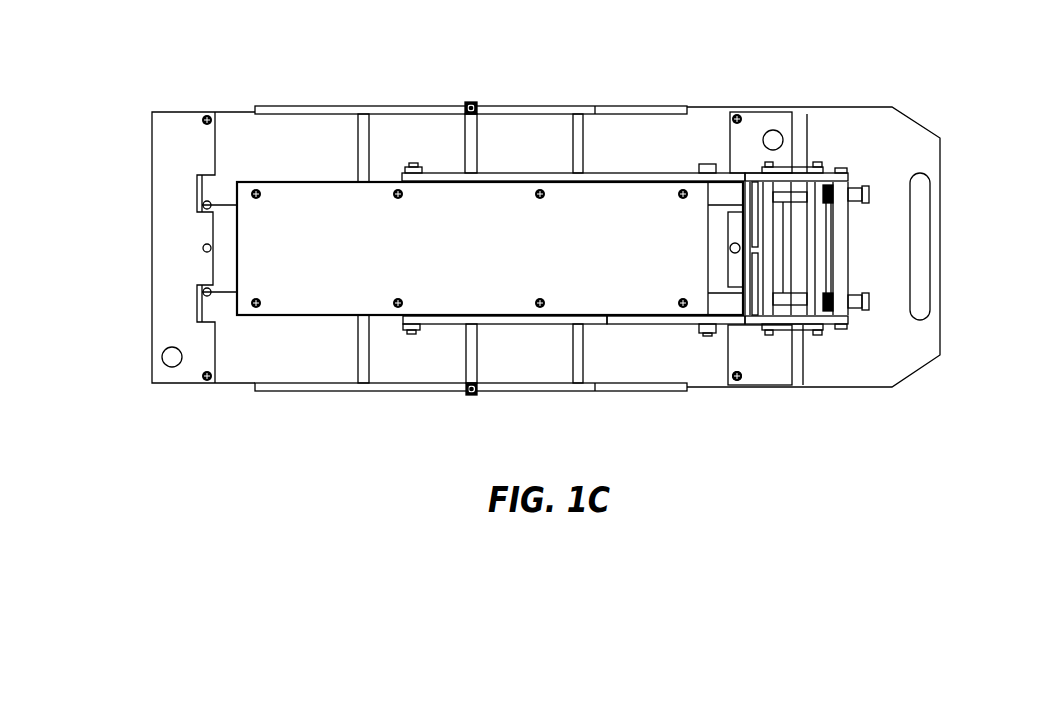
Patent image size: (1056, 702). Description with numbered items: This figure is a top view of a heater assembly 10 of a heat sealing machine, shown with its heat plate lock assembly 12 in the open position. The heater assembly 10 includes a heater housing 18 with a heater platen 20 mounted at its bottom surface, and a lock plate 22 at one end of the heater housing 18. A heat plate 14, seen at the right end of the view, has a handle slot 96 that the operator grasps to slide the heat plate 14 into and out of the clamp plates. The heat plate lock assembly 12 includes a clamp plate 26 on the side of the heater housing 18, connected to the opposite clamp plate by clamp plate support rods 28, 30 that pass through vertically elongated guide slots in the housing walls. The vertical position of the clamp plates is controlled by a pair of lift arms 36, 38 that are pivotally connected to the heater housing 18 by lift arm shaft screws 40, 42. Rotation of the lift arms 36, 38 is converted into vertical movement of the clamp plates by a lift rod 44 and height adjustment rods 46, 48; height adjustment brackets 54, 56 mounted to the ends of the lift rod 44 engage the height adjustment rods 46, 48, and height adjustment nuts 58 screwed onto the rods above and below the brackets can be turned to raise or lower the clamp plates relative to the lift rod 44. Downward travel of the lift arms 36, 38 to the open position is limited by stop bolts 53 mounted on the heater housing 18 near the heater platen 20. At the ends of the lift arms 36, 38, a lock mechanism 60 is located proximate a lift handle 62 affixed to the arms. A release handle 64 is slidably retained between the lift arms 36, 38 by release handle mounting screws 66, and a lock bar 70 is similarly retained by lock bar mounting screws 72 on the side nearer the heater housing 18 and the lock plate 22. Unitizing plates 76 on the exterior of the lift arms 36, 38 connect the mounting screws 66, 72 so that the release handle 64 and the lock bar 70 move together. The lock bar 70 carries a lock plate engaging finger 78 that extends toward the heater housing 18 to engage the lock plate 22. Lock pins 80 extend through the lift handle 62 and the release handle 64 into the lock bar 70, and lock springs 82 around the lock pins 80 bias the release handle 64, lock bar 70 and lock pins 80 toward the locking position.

The heater assembly 10 is at (950, 118).
The heat plate lock assembly 12 is at (653, 397).
The heat plate 14 is at (933, 150).
The heater housing 18 is at (312, 207).
The heater platen 20 is at (234, 122).
The lock plate 22 is at (748, 183).
The clamp plate 26 is at (378, 108).
The clamp plate support rod 28 is at (580, 132).
The clamp plate support rod 30 is at (362, 348).
The lift arm 36 is at (603, 322).
The lift arm 38 is at (510, 182).
The lift arm shaft screw 40 is at (411, 332).
The lift arm shaft screw 42 is at (412, 165).
The lift rod 44 is at (473, 350).
The height adjustment rod 46 is at (478, 396).
The height adjustment rod 48 is at (477, 102).
The stop bolt 53 is at (705, 163).
The height adjustment bracket 54 is at (470, 396).
The height adjustment bracket 56 is at (470, 102).
The height adjustment nut 58 is at (468, 102).
The lock mechanism 60 is at (862, 175).
The lift handle 62 is at (840, 262).
The release handle 64 is at (833, 219).
The release handle mounting screw 66 is at (825, 168).
The lock bar 70 is at (767, 232).
The lock bar mounting screw 72 is at (767, 162).
The unitizing plate 76 is at (797, 168).
The lock plate engaging finger 78 is at (736, 388).
The lock pin 80 is at (870, 193).
The lock spring 82 is at (827, 180).
The handle slot 96 is at (923, 297).